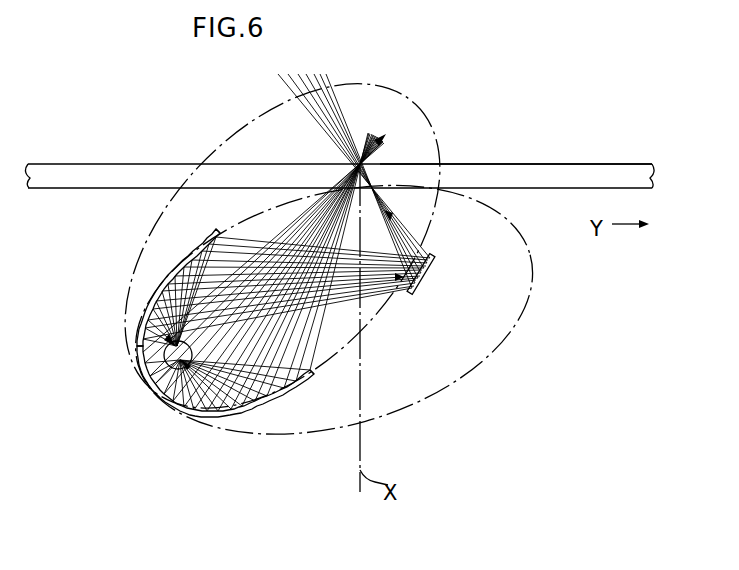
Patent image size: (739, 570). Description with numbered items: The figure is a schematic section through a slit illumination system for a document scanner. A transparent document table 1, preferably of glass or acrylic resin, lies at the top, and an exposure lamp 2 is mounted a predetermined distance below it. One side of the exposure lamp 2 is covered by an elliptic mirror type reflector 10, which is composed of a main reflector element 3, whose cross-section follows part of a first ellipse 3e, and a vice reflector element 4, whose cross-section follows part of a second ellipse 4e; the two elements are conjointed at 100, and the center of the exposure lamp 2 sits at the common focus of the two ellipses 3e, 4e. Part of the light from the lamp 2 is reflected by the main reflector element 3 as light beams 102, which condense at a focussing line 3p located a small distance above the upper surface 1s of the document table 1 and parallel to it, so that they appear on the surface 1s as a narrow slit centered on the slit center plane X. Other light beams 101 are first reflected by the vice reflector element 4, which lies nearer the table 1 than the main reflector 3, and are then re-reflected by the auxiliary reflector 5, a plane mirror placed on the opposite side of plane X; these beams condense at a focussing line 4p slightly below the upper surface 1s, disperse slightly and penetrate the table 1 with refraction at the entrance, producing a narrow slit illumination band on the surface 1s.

The transparent document table 1 is at (597, 163).
The upper surface of document table 1s is at (456, 163).
The exposure lamp 2 is at (168, 357).
The main reflector element 3 is at (228, 418).
The first ellipse 3e is at (205, 160).
The focussing line 3p is at (383, 138).
The vice reflector element 4 is at (161, 287).
The second ellipse 4e is at (533, 270).
The focussing line 4p is at (377, 200).
The auxiliary reflector 5 is at (428, 282).
The elliptic mirror type reflector 10 is at (163, 260).
The conjoint of main and vice reflector elements 100 is at (157, 403).
The light beams 101 is at (224, 247).
The reflected light beams 102 is at (258, 408).